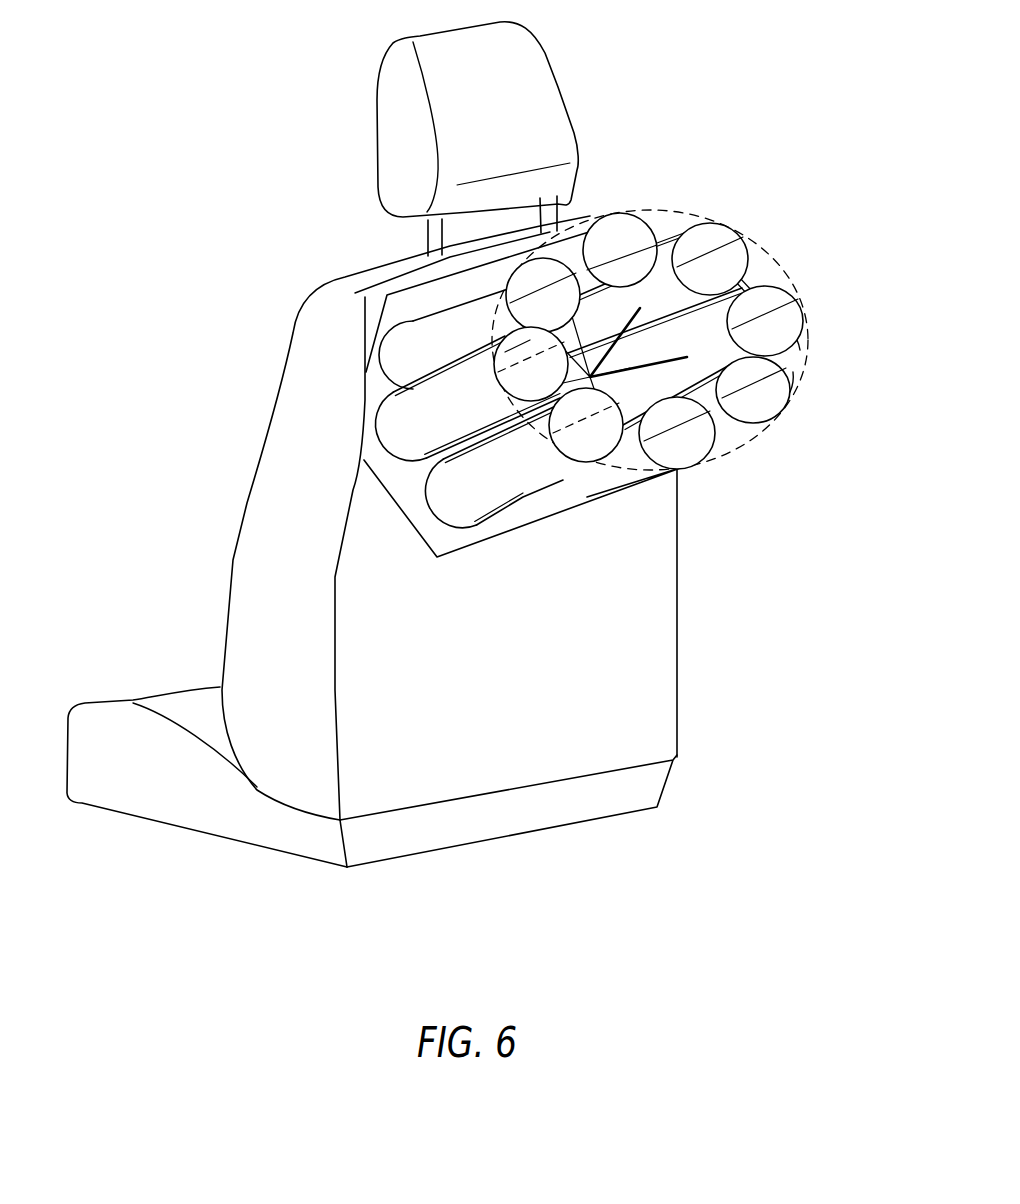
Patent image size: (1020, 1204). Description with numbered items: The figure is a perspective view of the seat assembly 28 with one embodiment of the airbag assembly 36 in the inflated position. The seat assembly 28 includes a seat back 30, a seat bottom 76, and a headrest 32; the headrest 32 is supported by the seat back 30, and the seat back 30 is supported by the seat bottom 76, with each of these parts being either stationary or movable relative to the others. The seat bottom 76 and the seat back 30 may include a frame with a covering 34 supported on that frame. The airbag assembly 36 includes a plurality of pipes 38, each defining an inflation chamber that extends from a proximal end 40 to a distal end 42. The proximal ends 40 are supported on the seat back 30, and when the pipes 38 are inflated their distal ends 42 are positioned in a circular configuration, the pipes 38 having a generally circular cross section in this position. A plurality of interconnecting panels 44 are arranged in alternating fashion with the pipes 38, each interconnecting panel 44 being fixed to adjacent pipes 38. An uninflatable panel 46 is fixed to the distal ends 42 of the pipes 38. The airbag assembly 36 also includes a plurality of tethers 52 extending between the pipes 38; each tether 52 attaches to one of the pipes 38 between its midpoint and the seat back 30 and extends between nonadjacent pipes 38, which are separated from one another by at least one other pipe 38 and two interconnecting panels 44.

The seat assembly 28 is at (248, 287).
The seat back 30 is at (265, 598).
The headrest 32 is at (512, 55).
The covering 34 is at (468, 555).
The airbag assembly 36 is at (618, 196).
The pipes 38 is at (395, 300).
The proximal end 40 is at (363, 363).
The distal end 42 is at (517, 328).
The interconnecting panels 44 is at (553, 240).
The uninflatable panel 46 is at (785, 214).
The tethers 52 is at (588, 358).
The seat bottom 76 is at (95, 747).